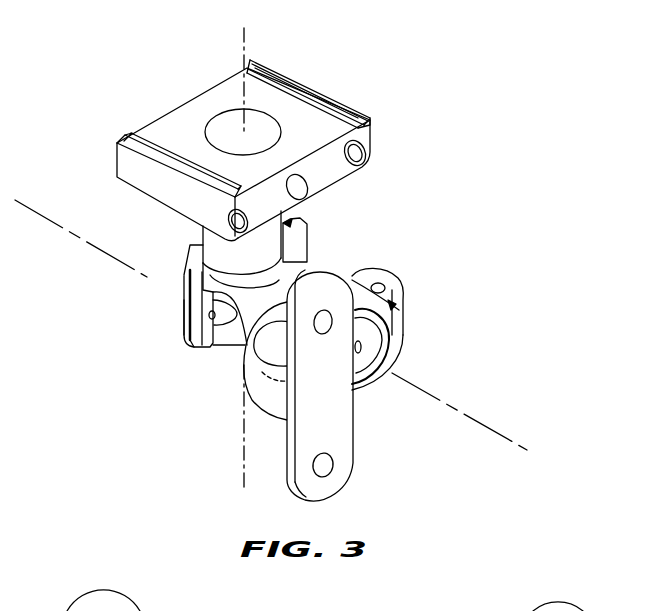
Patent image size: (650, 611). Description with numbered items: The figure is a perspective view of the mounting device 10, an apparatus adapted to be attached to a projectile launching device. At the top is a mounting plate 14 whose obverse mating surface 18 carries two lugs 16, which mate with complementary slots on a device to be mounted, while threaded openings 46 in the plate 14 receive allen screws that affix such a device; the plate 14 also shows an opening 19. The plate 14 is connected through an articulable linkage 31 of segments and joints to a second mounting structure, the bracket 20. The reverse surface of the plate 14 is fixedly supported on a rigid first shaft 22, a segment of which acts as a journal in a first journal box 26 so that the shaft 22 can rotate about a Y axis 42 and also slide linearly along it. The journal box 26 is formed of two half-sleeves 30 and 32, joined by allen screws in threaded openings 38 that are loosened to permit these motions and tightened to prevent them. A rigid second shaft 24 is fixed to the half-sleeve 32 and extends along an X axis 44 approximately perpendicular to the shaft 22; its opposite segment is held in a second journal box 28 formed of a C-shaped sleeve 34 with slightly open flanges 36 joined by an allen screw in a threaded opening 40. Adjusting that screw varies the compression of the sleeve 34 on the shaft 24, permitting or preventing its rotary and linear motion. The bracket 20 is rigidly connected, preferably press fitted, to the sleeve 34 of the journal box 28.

The mounting device 10 is at (428, 128).
The mounting plate 14 is at (367, 137).
The lugs 16 is at (133, 137).
The mating surface 18 is at (336, 126).
The hole 19 is at (330, 190).
The bracket 20 is at (349, 457).
The first shaft 22 is at (238, 127).
The second shaft 24 is at (247, 350).
The first journal box 26 is at (176, 298).
The second journal box 28 is at (389, 367).
The half-sleeve 30 is at (182, 323).
The articulable linkage 31 is at (176, 251).
The half-sleeve 32 is at (193, 343).
The C-shaped sleeve 34 is at (389, 302).
The flanges 36 is at (397, 287).
The threaded openings 38 is at (208, 314).
The threaded opening 40 is at (377, 285).
The Y axis 42 is at (243, 488).
The X axis 44 is at (32, 206).
The threaded openings 46 is at (357, 155).